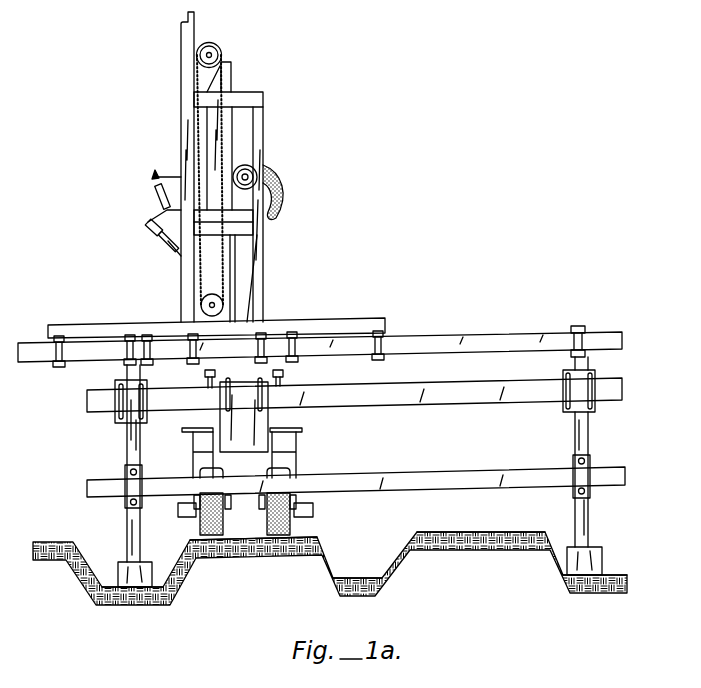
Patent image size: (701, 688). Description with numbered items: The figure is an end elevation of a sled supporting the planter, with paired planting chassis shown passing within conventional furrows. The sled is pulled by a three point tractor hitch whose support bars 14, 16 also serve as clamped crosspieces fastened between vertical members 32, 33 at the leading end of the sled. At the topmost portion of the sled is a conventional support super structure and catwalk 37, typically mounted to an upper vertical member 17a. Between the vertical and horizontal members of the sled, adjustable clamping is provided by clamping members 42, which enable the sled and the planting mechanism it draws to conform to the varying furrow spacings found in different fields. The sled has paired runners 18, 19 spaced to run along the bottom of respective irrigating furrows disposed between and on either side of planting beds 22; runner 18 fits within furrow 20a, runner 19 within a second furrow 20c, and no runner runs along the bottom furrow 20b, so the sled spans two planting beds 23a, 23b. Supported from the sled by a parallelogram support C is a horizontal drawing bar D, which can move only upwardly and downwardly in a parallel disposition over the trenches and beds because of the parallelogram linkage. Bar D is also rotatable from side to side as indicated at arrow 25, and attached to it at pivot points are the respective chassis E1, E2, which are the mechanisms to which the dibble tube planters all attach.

The support super structure and catwalk 37 is at (136, 316).
The clamping members 42 is at (129, 334).
The upper vertical member 17a is at (452, 334).
The support bar 14 is at (452, 384).
The support bar 16 is at (446, 471).
The vertical member 33 is at (141, 449).
The vertical member 32 is at (589, 442).
The runner 19 is at (151, 562).
The runner 18 is at (600, 559).
The parallelogram support C is at (244, 411).
The horizontal bar D is at (245, 468).
The chassis E1 is at (293, 450).
The chassis E2 is at (192, 456).
The arrow 25 is at (256, 484).
The planting beds 22 is at (483, 542).
The planting bed 23a is at (445, 532).
The planting bed 23b is at (243, 538).
The furrow 20a is at (618, 586).
The furrow 20b is at (365, 586).
The furrow 20c is at (147, 593).